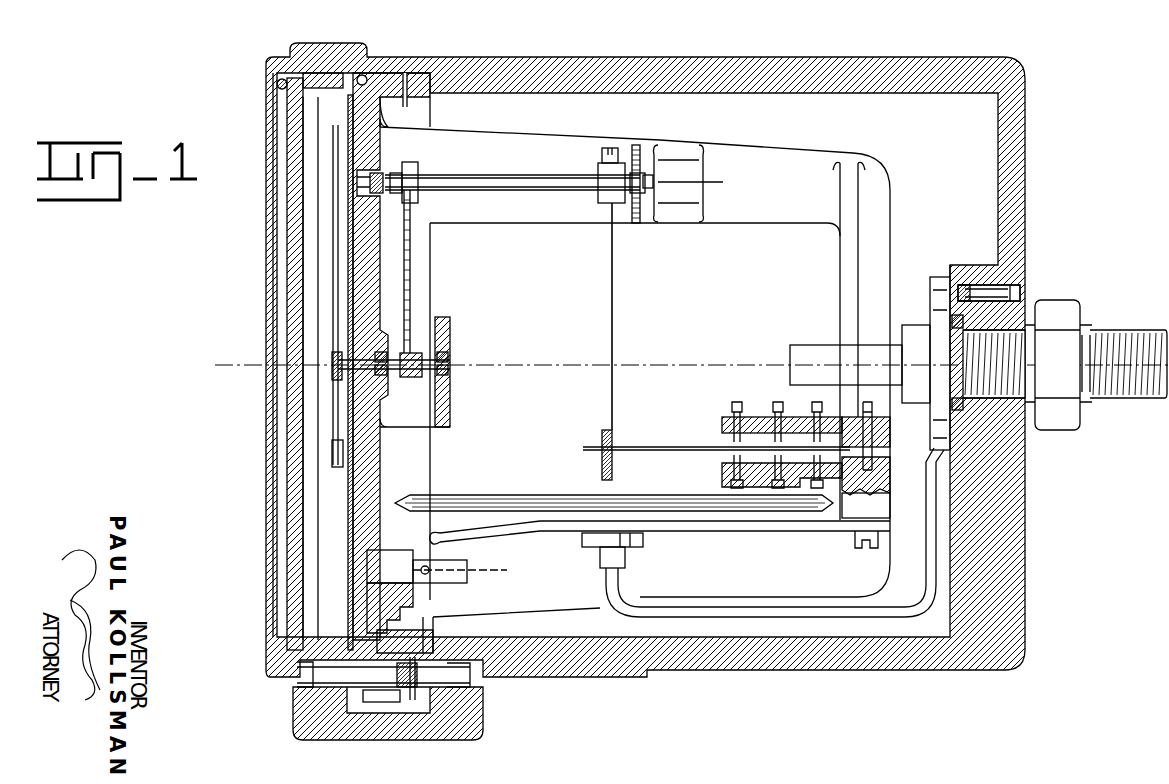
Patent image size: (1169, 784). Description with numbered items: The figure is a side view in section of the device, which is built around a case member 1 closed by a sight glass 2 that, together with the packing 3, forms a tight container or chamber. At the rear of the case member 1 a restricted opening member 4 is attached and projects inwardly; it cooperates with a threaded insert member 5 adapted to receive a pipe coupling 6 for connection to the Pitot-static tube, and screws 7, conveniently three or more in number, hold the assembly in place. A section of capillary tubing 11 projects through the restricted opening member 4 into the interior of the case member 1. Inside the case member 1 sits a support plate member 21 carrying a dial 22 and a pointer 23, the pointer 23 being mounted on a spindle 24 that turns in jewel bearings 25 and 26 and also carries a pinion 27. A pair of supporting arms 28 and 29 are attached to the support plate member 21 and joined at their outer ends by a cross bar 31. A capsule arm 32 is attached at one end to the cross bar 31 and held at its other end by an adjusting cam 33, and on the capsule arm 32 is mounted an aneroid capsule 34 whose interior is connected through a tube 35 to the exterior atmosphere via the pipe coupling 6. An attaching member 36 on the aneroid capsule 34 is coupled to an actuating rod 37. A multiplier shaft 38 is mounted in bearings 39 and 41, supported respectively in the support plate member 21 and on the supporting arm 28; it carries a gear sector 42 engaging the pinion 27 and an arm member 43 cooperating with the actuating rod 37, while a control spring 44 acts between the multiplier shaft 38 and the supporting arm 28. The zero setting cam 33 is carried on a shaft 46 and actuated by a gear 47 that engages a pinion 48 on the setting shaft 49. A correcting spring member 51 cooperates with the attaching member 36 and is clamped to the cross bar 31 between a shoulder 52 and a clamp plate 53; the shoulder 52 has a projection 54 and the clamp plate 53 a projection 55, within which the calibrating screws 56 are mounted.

The case member 1 is at (1030, 600).
The sight glass 2 is at (290, 572).
The packing 3 is at (316, 364).
The restricted opening member 4 is at (912, 337).
The threaded insert member 5 is at (1025, 413).
The pipe coupling 6 is at (1070, 419).
The screws 7 is at (1020, 290).
The capillary tubing 11 is at (776, 358).
The support plate member 21 is at (375, 478).
The dial 22 is at (355, 515).
The pointer 23 is at (350, 470).
The spindle 24 is at (452, 349).
The jewel bearing 25 is at (452, 371).
The jewel bearing 26 is at (385, 378).
The pinion 27 is at (411, 375).
The supporting arm 28 is at (470, 212).
The supporting arm 29 is at (550, 612).
The cross bar 31 is at (838, 290).
The capsule arm 32 is at (747, 527).
The adjusting cam 33 is at (457, 580).
The aneroid capsule 34 is at (503, 497).
The tube 35 is at (703, 607).
The attaching member 36 is at (600, 468).
The actuating rod 37 is at (613, 319).
The multiplier shaft 38 is at (489, 181).
The bearing 39 is at (385, 168).
The bearing 41 is at (650, 205).
The gear sector 42 is at (412, 296).
The arm member 43 is at (606, 187).
The control spring 44 is at (637, 215).
The shaft 46 is at (390, 566).
The gear 47 is at (362, 600).
The pinion 48 is at (382, 703).
The setting shaft 49 is at (297, 683).
The correcting spring member 51 is at (668, 446).
The shoulder 52 is at (885, 470).
The clamp plate 53 is at (890, 438).
The projection 54 is at (720, 468).
The projection 55 is at (720, 418).
The calibrating screws 56 is at (815, 402).